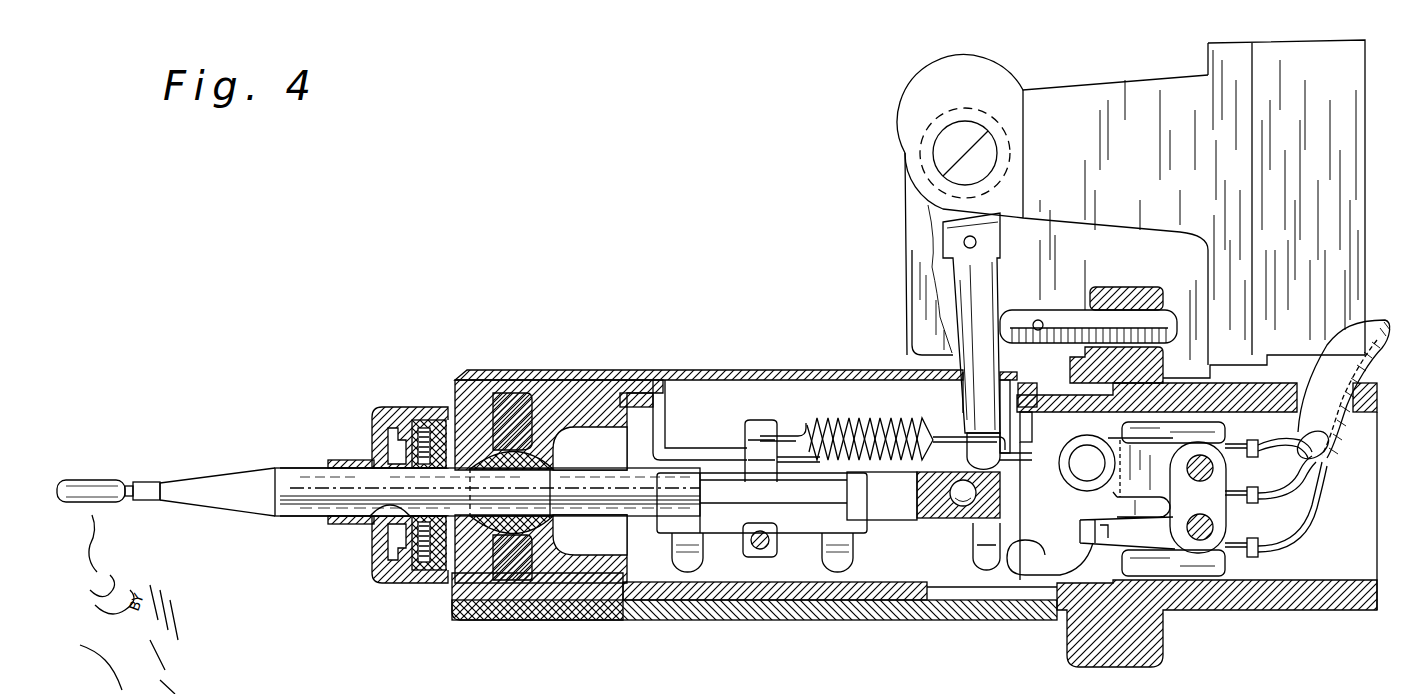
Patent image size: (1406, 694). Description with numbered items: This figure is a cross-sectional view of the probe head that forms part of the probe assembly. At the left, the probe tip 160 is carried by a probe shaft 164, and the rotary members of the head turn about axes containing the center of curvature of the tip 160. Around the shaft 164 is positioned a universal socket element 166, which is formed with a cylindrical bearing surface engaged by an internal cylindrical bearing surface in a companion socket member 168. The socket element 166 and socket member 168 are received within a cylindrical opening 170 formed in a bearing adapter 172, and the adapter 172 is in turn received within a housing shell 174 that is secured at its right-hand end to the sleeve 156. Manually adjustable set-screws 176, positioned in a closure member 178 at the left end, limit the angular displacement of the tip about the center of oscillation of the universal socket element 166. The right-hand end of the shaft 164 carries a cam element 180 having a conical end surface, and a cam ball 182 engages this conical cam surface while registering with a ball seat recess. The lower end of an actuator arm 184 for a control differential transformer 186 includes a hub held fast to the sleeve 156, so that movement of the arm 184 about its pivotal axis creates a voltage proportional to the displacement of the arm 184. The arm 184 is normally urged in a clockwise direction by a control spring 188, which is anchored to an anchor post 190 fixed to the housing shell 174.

The sleeve 156 is at (1283, 605).
The probe tip 160 is at (93, 480).
The probe shaft 164 is at (622, 505).
The universal socket element 166 is at (527, 433).
The companion socket member 168 is at (388, 508).
The cylindrical opening 170 is at (562, 450).
The bearing adapter 172 is at (520, 582).
The housing shell 174 is at (780, 545).
The set-screws 176 is at (430, 580).
The closure member 178 is at (400, 410).
The cam element 180 is at (923, 518).
The cam ball 182 is at (962, 507).
The actuator arm 184 is at (993, 297).
The control differential transformer 186 is at (1117, 93).
The control spring 188 is at (803, 420).
The anchor post 190 is at (717, 462).